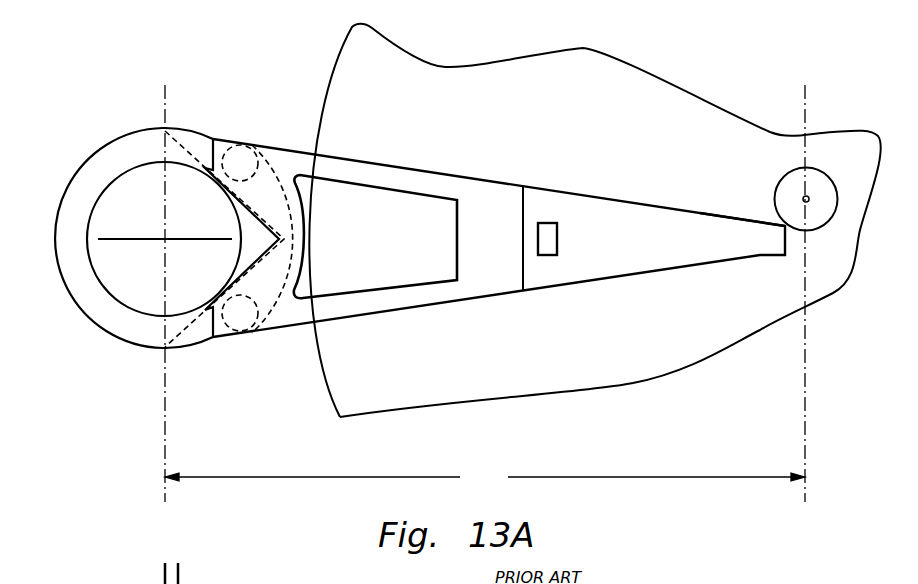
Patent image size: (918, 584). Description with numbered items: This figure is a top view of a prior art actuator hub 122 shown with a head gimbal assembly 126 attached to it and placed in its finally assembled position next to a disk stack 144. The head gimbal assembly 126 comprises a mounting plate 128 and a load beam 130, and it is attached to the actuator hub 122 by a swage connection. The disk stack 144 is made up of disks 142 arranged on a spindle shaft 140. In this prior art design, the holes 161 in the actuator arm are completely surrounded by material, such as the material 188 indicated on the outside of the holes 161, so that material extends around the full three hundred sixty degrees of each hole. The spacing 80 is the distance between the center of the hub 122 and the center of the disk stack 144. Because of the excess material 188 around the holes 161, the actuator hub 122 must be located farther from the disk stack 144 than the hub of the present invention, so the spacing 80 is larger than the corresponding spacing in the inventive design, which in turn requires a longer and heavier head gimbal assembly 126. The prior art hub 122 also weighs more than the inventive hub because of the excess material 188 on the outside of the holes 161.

The spacing 80 is at (485, 478).
The actuator hub 122 is at (124, 335).
The head gimbal assembly 126 is at (508, 179).
The mounting plate 128 is at (430, 172).
The load beam 130 is at (698, 212).
The spindle shaft 140 is at (806, 199).
The disks 142 is at (603, 388).
The disk stack 144 is at (712, 393).
The holes 161 is at (228, 150).
The material 188 is at (254, 149).